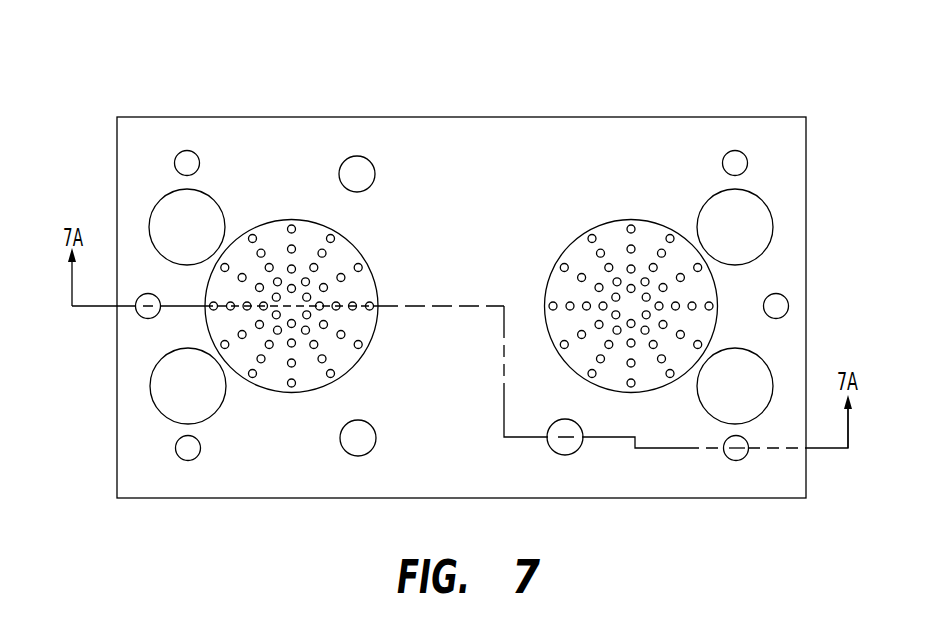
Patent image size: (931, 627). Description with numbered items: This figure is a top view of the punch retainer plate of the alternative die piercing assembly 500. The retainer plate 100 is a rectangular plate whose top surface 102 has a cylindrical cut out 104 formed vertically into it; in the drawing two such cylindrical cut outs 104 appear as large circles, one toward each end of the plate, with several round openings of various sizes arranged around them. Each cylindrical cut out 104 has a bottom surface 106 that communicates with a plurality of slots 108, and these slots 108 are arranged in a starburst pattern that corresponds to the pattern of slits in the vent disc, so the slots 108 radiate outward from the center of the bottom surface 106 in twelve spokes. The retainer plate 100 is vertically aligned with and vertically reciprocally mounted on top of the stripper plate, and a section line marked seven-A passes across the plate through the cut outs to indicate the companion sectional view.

The gas distribution plate assembly 500 is at (226, 70).
The retainer plate 100 is at (112, 155).
The top surface 102 is at (469, 193).
The cylindrical cut out 104 is at (378, 328).
The bottom surface 106 is at (343, 358).
The slots 108 is at (346, 278).